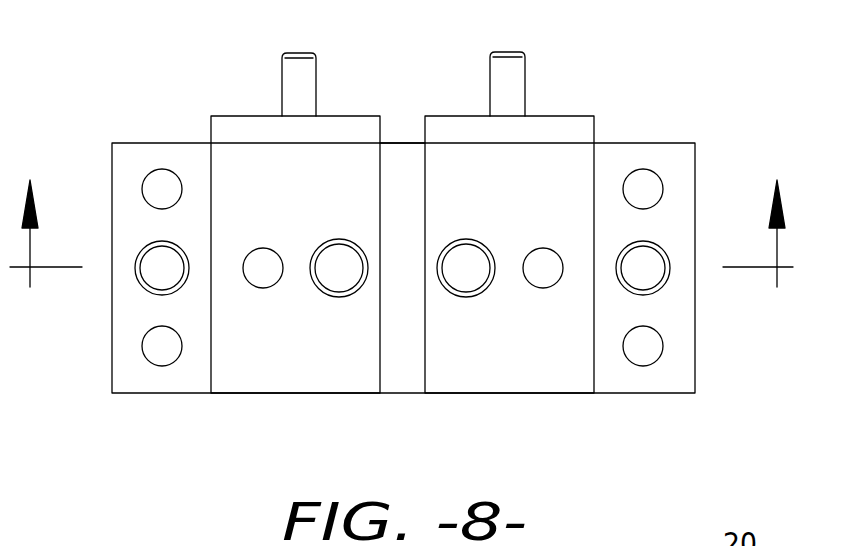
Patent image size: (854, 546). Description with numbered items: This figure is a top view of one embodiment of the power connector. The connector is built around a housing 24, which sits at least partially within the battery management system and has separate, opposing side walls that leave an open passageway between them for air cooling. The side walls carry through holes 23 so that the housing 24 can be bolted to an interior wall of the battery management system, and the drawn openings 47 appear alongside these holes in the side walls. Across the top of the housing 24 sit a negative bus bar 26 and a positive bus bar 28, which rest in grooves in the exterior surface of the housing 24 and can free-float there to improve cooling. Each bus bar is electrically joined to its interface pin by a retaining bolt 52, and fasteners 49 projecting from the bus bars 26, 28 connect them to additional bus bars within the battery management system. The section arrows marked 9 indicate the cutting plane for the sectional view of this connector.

The section line 9- 9 is at (401, 208).
The through holes 23 is at (160, 186).
The housing 24 is at (406, 128).
The negative bus bar 26 is at (247, 116).
The positive bus bar 28 is at (558, 116).
The counterbored holes 47 is at (157, 273).
The fasteners 49 is at (293, 73).
The retaining bolts 52 is at (330, 265).